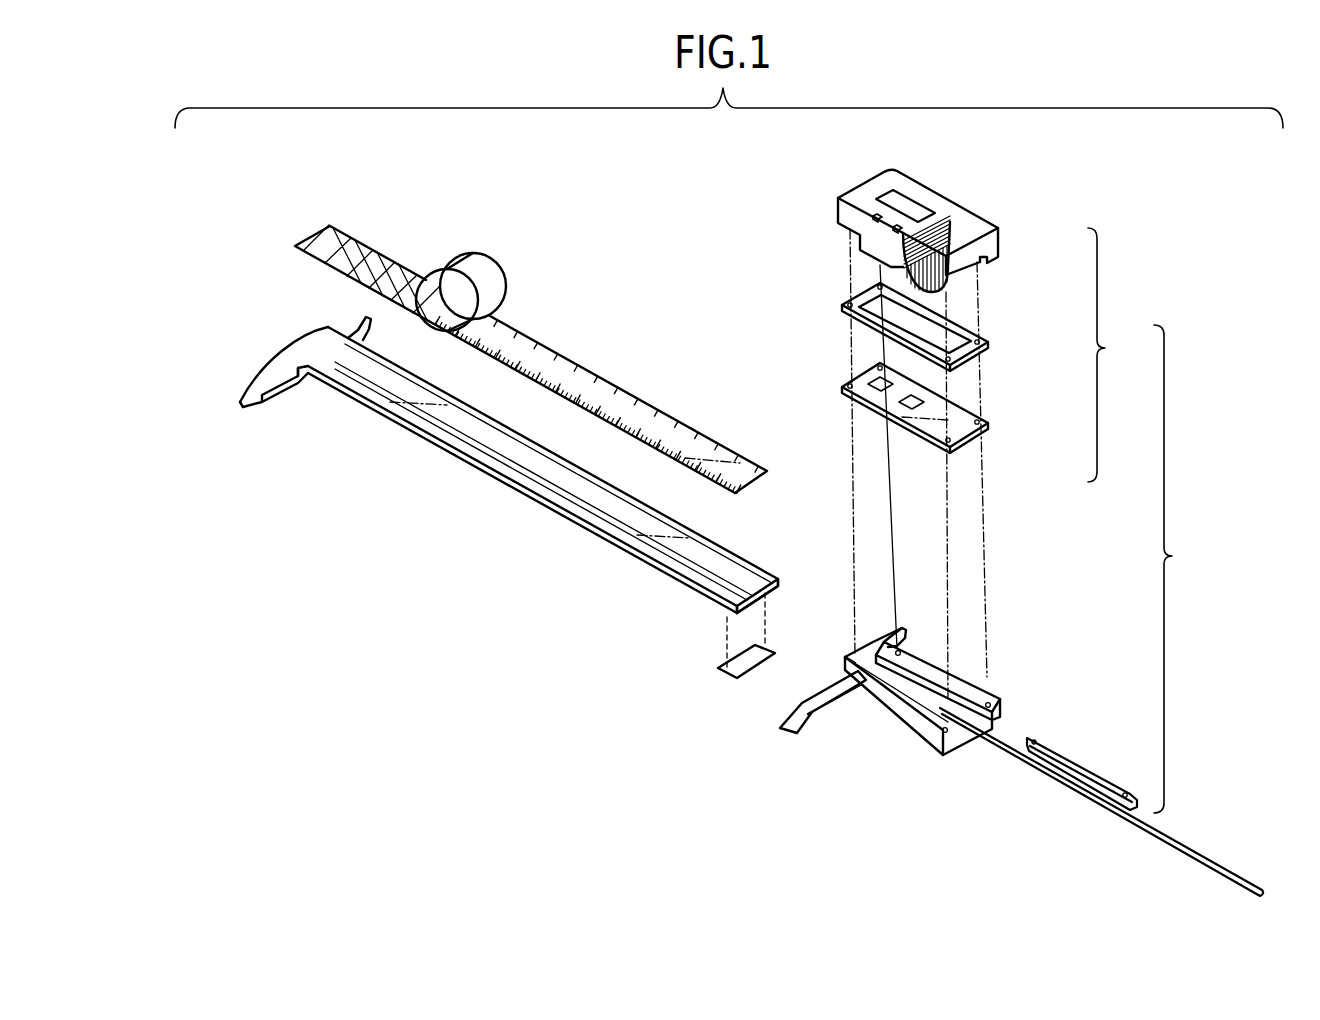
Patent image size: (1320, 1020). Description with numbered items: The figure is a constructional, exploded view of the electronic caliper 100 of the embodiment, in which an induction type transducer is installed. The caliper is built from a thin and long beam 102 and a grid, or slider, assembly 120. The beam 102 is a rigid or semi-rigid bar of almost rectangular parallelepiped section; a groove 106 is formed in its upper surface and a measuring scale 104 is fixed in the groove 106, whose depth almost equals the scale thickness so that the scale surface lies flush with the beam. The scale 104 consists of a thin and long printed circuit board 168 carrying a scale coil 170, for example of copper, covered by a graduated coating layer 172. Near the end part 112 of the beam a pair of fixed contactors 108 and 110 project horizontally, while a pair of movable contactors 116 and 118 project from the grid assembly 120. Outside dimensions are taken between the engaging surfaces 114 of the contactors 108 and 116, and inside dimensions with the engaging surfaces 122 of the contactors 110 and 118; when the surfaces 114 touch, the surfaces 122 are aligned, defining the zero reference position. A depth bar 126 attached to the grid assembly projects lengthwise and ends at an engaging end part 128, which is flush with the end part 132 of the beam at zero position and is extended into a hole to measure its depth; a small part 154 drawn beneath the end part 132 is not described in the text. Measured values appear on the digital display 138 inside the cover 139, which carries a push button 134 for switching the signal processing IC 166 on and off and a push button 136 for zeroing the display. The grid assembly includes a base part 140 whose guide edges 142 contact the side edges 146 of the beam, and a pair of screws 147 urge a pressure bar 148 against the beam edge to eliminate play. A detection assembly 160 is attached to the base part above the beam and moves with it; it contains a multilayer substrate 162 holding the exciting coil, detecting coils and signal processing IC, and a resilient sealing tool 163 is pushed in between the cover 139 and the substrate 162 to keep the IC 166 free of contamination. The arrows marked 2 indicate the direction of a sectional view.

The electronic caliper 100 is at (412, 606).
The thin and long beam 102 is at (493, 480).
The measuring scale 104 is at (680, 424).
The groove 106 is at (675, 557).
The fixed contactor 108 is at (267, 373).
The fixed contactor 110 is at (343, 342).
The end part of the beam 112 is at (313, 347).
The engaging surface 114 is at (281, 402).
The movable contactor 116 is at (832, 694).
The movable contactor 118 is at (880, 623).
The grid assembly 120 is at (1179, 571).
The engaging surface 122 is at (357, 318).
The depth bar 126 is at (1077, 790).
The engaging end part 128 is at (1215, 862).
The end part of the beam 132 is at (773, 597).
The push button 134 is at (873, 210).
The push button 136 is at (898, 222).
The digital display 138 is at (908, 200).
The cover 139 is at (998, 232).
The base part 140 is at (897, 733).
The guide edges 142 is at (1003, 713).
The side edges 146 is at (572, 512).
The screws 147 is at (924, 650).
The pressure bar 148 is at (1117, 807).
The end cap 154 is at (728, 668).
The detection assembly 160 is at (1111, 364).
The substrate 162 is at (978, 443).
The sealing tool 163 is at (990, 340).
The signal processing IC 166 is at (870, 378).
The printed circuit board 168 is at (320, 224).
The scale coil 170 is at (387, 262).
The coating layer 172 is at (485, 267).
The section line 2 is at (982, 180).